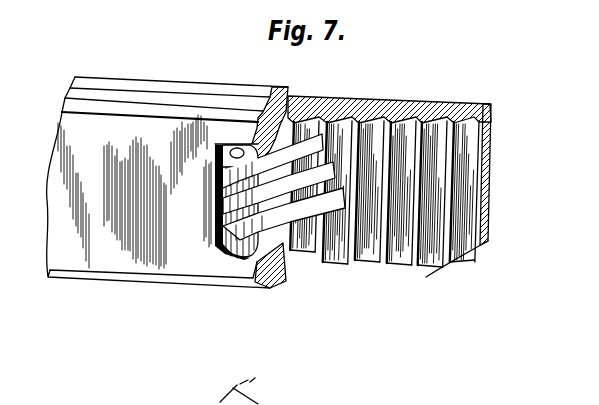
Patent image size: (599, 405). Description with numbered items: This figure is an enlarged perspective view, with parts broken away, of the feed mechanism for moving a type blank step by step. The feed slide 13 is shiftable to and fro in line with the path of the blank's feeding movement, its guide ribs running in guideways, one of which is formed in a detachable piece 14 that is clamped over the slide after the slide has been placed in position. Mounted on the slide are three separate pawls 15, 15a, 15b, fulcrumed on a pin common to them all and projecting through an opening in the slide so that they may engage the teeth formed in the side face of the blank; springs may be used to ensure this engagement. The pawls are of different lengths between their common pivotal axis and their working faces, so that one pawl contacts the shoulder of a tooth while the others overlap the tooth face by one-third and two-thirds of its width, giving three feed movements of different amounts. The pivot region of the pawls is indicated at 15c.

The feed slide 13 is at (172, 85).
The detachable piece 14 is at (336, 262).
The pawl 15 is at (290, 228).
The pawl 15a is at (267, 205).
The pawl 15b is at (256, 180).
The hinge barrel 15c is at (217, 152).